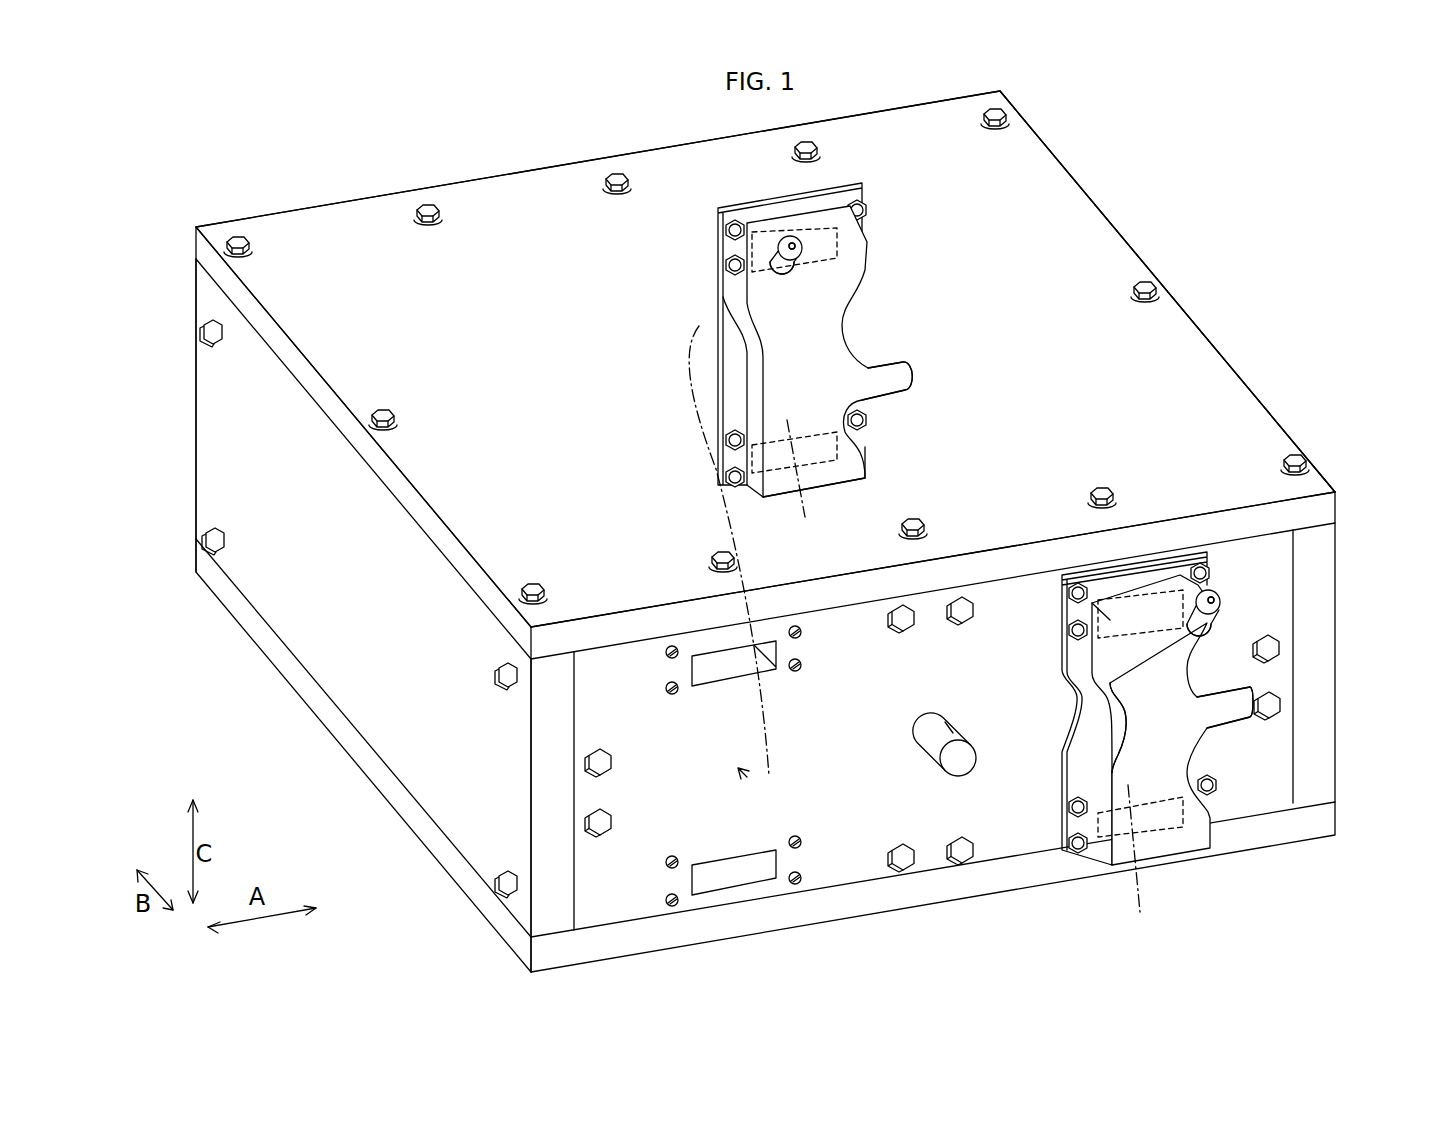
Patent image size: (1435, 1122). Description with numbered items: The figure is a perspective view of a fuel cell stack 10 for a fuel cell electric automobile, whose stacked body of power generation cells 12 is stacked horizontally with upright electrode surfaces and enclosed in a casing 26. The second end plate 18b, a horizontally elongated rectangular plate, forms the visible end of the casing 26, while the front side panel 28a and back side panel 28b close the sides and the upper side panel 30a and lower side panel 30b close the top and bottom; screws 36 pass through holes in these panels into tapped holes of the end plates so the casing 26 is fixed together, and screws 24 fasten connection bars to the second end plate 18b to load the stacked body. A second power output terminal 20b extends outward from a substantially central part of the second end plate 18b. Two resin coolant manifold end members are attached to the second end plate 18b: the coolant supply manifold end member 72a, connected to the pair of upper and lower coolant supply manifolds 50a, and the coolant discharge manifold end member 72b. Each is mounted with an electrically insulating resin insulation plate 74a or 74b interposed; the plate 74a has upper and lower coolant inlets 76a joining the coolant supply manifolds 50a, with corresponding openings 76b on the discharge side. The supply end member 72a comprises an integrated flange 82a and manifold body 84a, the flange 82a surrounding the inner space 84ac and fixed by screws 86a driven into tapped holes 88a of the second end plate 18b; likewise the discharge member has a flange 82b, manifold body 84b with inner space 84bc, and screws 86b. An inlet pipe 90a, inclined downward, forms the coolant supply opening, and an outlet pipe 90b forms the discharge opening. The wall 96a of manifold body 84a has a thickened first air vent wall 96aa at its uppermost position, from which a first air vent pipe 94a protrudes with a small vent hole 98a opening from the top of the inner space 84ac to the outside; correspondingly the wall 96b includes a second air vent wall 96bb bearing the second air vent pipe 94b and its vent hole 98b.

The fuel cell stack 10 is at (400, 162).
The power generation cell 12 is at (1110, 257).
The second end plate 18b is at (1256, 800).
The second power output terminal 20b is at (943, 763).
The screw 24 is at (592, 822).
The casing 26 is at (1128, 220).
The front side panel 28a is at (1322, 555).
The back side panel 28b is at (426, 769).
The upper side panel 30a is at (1175, 340).
The lower side panel 30b is at (502, 922).
The screw 36 is at (433, 226).
The coolant supply manifold 50a is at (712, 672).
The coolant supply manifold end member 72a is at (794, 462).
The coolant discharge manifold end member 72b is at (1136, 706).
The insulation plate 74a is at (714, 213).
The insulation plate 74b is at (1056, 606).
The coolant inlet 76a is at (838, 256).
The coolant outlet 76b is at (1157, 600).
The flange 82a is at (735, 405).
The flange 82b is at (1080, 772).
The manifold body 84a is at (834, 332).
The inner space 84ac is at (818, 483).
The manifold body 84b is at (1172, 683).
The inner space 84bc is at (1130, 864).
The screw 86a is at (727, 270).
The screw 86b is at (1070, 633).
The tapped hole 88a is at (666, 692).
The inlet pipe 90a is at (902, 378).
The outlet pipe 90b is at (1248, 718).
The first air vent pipe 94a is at (781, 254).
The second air vent pipe 94b is at (1196, 606).
The wall 96a is at (848, 470).
The first air vent wall 96aa is at (783, 272).
The wall 96b is at (1140, 738).
The second air vent wall 96bb is at (1200, 645).
The vent hole 98a is at (790, 242).
The vent hole 98b is at (1211, 592).